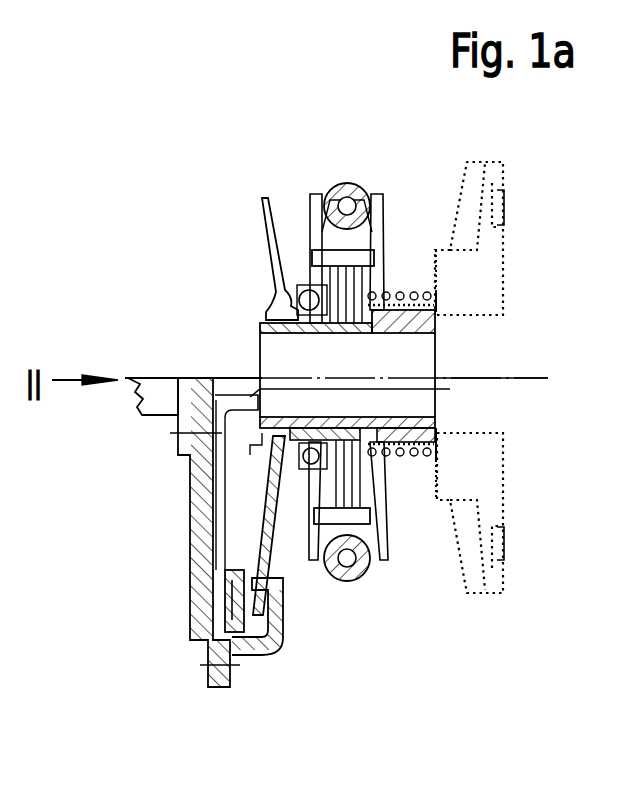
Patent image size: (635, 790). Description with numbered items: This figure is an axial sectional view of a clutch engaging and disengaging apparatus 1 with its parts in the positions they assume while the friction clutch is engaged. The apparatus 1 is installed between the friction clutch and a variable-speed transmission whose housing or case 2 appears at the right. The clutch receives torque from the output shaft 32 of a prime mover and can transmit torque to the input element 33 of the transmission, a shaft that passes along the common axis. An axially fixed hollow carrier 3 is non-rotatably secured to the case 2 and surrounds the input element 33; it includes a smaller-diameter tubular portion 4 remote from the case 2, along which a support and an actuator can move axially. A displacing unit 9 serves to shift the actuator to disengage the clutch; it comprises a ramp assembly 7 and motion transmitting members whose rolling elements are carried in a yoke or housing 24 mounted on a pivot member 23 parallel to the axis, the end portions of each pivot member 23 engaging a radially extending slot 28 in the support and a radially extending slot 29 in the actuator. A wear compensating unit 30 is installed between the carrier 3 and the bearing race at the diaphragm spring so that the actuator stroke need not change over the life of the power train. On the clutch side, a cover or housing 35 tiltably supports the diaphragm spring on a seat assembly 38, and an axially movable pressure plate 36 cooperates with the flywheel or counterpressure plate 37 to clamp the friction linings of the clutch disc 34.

The clutch engaging and disengaging apparatus 1 is at (552, 550).
The transmission housing or case 2 is at (470, 282).
The carrier 3 is at (437, 505).
The tubular sleeve-like portion 4 is at (402, 283).
The ramp assembly 7 is at (357, 160).
The displacing unit 9 is at (368, 595).
The pivot member 23 is at (326, 585).
The yoke or housing 24 is at (332, 188).
The radially extending slot 28 is at (378, 292).
The radially extending slot 29 is at (310, 235).
The wear compensating unit 30 is at (411, 492).
The output shaft 32 is at (158, 395).
The input element 33 is at (442, 383).
The clutch disc or clutch plate 34 is at (230, 530).
The clutch cover or housing 35 is at (243, 660).
The pressure plate 36 is at (240, 601).
The flywheel or counterpressure plate 37 is at (190, 484).
The seat assembly 38 is at (246, 540).